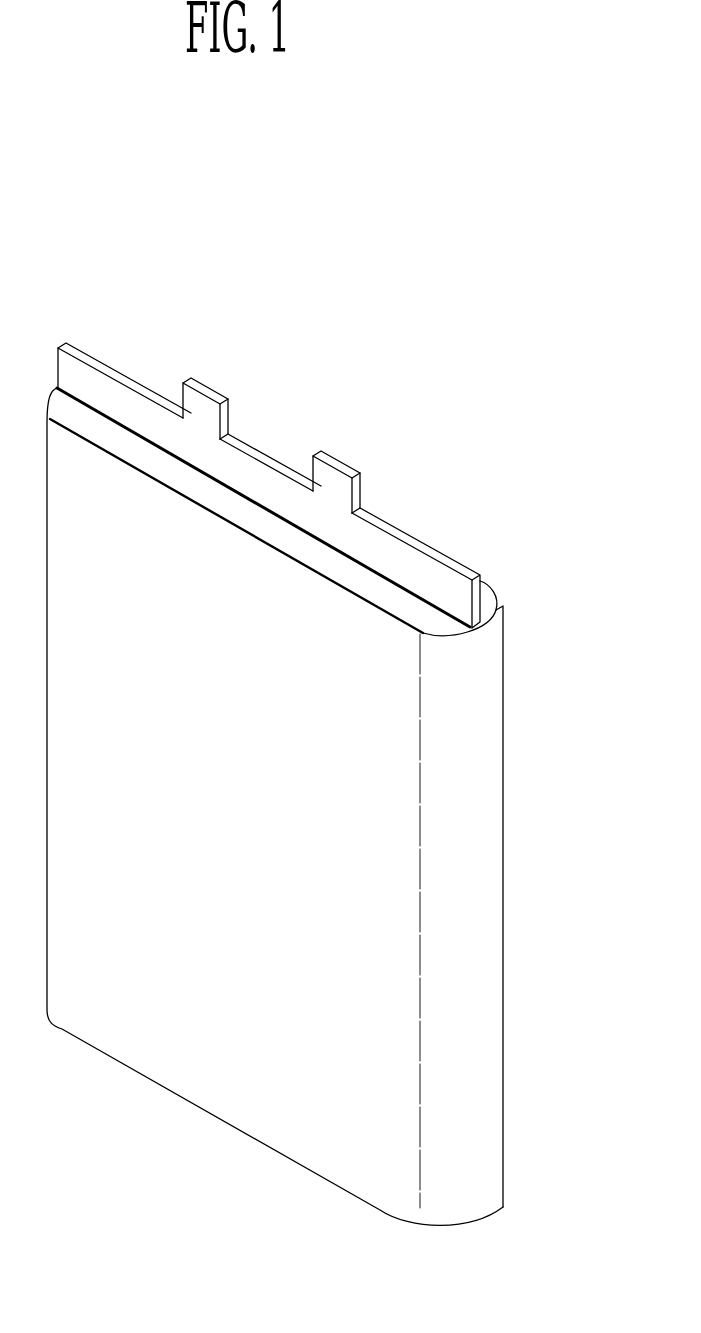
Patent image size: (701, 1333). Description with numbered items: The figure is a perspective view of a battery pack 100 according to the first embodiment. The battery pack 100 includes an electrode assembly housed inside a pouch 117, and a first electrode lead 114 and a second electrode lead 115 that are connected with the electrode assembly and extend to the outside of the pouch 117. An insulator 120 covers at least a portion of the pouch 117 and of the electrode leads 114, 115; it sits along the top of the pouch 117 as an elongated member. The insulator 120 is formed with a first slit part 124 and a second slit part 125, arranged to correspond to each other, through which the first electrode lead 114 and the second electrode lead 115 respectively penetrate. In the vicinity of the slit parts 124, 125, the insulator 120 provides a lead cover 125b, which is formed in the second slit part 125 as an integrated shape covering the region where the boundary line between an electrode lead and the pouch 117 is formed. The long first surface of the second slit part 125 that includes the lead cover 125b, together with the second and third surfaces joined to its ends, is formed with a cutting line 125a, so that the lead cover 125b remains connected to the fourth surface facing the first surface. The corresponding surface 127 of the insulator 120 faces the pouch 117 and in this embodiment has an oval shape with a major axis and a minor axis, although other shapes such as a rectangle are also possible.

The battery pack 100 is at (40, 275).
The insulator 120 is at (134, 362).
The first electrode lead 114 is at (193, 397).
The second electrode lead 115 is at (323, 470).
The first slit part 124 is at (228, 433).
The second slit part 125 is at (352, 510).
The cutting line 125a is at (362, 507).
The lead cover 125b is at (337, 501).
The corresponding surface 127 is at (392, 605).
The pouch 117 is at (492, 843).